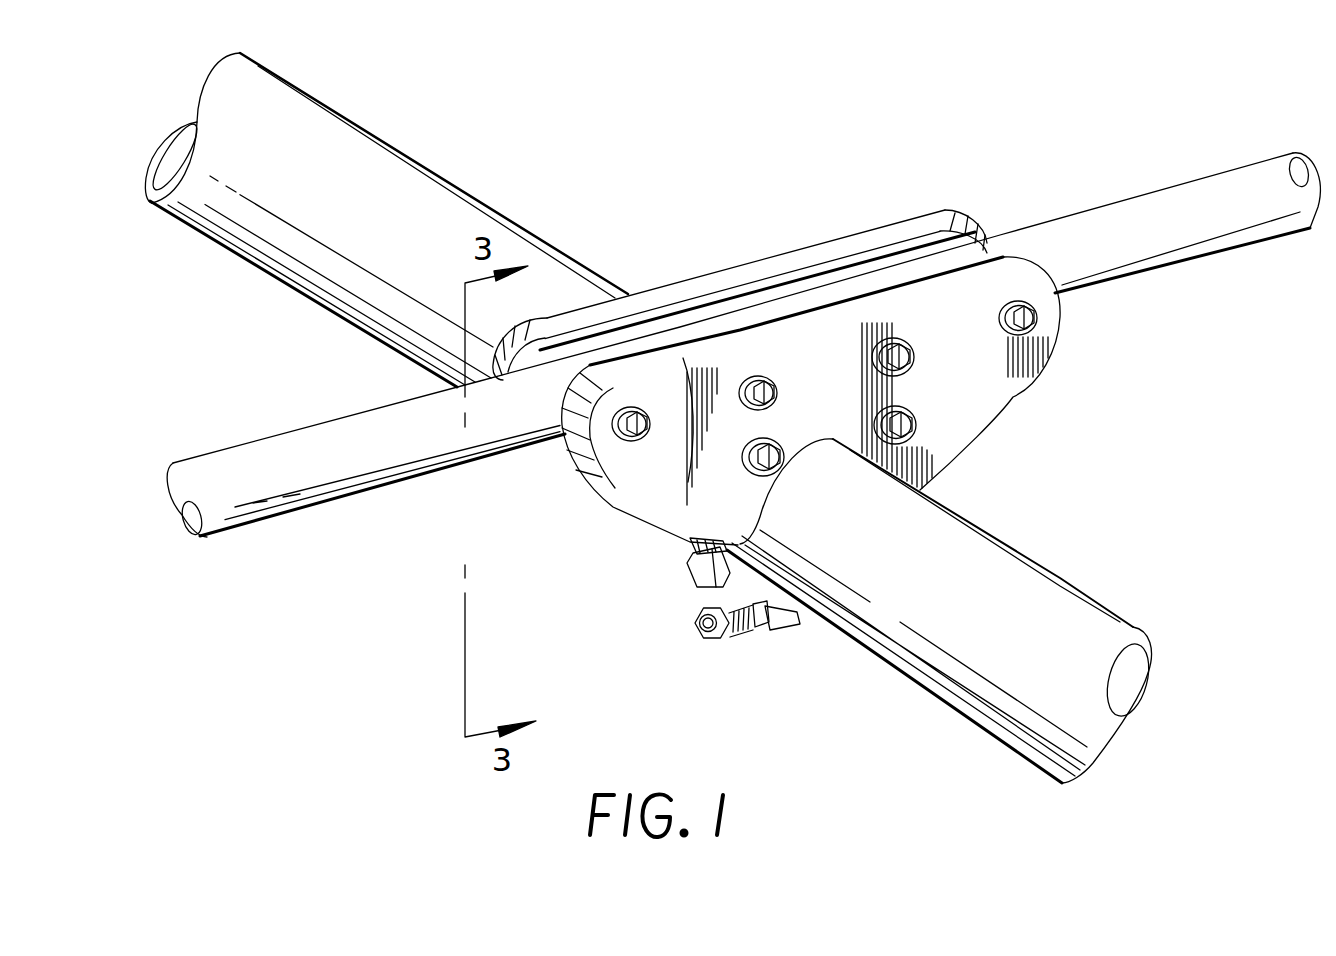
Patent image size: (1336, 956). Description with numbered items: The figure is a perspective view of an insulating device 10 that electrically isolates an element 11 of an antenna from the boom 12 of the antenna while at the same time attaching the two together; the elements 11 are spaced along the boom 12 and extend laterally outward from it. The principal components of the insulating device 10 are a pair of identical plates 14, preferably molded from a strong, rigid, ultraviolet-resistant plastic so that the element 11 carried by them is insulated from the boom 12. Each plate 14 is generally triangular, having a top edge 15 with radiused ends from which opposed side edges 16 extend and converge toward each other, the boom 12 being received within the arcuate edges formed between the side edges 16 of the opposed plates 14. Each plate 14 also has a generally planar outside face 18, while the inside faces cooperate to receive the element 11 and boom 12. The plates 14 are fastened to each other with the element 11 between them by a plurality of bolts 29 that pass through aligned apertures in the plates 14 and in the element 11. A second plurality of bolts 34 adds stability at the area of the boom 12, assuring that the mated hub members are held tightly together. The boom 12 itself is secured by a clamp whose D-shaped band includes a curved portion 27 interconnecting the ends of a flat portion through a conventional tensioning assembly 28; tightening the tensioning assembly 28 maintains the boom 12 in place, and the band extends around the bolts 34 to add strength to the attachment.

The insulating device 10 is at (800, 233).
The element 11 is at (1190, 197).
The boom 12 is at (407, 170).
The plate 14 is at (966, 215).
The top edge 15 is at (690, 293).
The side edge 16 is at (995, 423).
The outside face 18 is at (985, 378).
The curved portion 27 is at (713, 585).
The tensioning assembly 28 is at (760, 637).
The bolt 29 is at (760, 385).
The bolt 34 is at (899, 363).